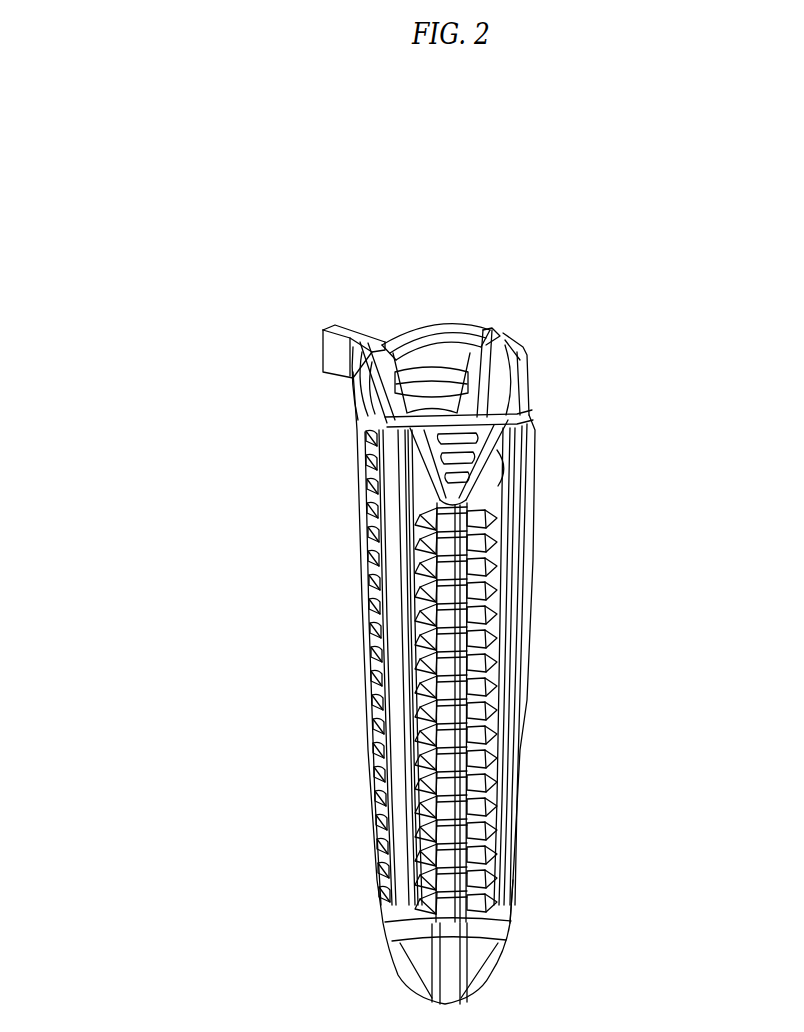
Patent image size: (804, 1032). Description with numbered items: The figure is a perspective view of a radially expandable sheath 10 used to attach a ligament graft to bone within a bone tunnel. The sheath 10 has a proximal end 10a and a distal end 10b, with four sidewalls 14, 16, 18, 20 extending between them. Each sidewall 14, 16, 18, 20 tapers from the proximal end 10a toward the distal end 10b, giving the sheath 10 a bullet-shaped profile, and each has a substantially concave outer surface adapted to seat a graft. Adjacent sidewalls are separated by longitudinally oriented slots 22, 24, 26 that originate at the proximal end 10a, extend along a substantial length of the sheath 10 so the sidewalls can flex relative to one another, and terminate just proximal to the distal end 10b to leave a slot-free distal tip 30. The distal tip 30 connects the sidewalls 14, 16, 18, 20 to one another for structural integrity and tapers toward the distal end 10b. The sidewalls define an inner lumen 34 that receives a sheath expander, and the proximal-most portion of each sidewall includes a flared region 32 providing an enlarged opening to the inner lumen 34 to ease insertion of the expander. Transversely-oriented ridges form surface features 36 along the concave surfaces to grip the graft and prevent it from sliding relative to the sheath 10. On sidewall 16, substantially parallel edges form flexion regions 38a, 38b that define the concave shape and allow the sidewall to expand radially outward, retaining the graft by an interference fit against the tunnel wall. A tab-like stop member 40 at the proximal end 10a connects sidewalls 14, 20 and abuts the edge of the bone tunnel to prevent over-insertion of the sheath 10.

The radially expandable sheath 10 is at (138, 190).
The proximal end 10a is at (606, 384).
The distal end 10b is at (606, 993).
The sidewall 14 is at (356, 447).
The sidewall 16 is at (415, 503).
The sidewall 18 is at (520, 366).
The sidewall 20 is at (420, 343).
The longitudinally oriented slot 22 is at (393, 620).
The longitudinally oriented slot 24 is at (513, 710).
The longitudinally oriented slot 26 is at (494, 332).
The distal tip 30 is at (383, 996).
The flared region 32 is at (498, 468).
The inner lumen 34 is at (450, 360).
The surface features 36 is at (495, 620).
The flexion region 38a is at (445, 812).
The flexion region 38b is at (470, 822).
The stop member 40 is at (338, 327).